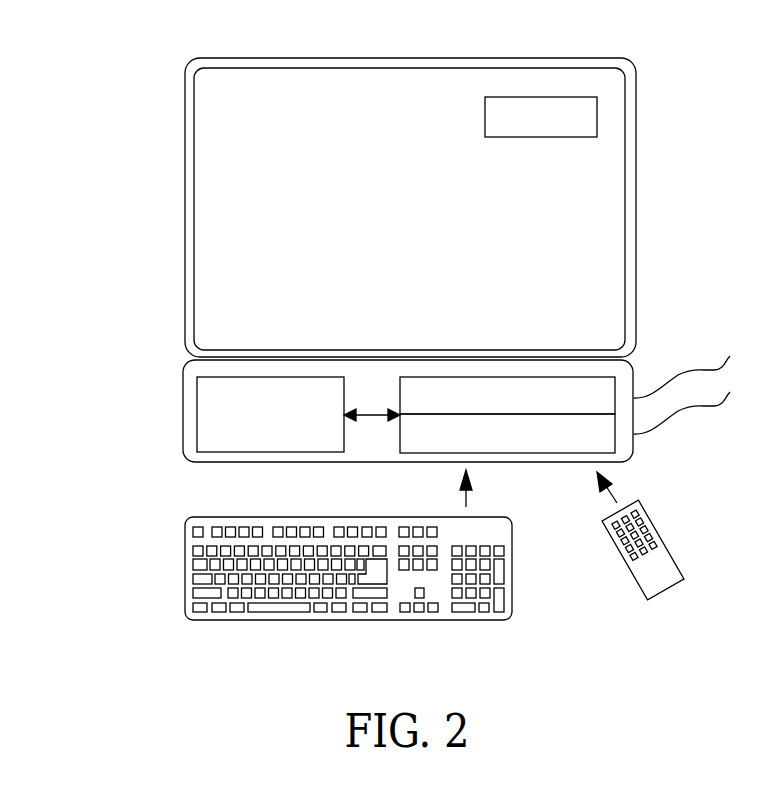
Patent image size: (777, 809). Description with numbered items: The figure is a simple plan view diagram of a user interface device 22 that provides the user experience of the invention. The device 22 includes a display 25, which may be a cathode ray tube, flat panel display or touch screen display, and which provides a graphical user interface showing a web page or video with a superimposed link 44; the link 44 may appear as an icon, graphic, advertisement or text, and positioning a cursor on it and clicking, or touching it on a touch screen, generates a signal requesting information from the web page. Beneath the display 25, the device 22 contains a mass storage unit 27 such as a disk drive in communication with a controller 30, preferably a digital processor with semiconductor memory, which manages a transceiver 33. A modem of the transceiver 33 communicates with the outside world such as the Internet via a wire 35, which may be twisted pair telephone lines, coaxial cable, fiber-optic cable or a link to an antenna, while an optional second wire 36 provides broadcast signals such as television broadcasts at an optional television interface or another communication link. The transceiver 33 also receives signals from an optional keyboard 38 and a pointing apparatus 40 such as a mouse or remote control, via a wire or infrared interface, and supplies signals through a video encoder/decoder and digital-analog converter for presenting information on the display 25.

The user interface device 22 is at (118, 70).
The display 25 is at (625, 173).
The mass storage unit 27 is at (302, 377).
The controller 30 is at (550, 453).
The transceiver 33 is at (505, 377).
The wire 35 is at (707, 370).
The second wire 36 is at (705, 406).
The keyboard 38 is at (185, 565).
The pointing apparatus 40 is at (612, 540).
The link 44 is at (543, 97).